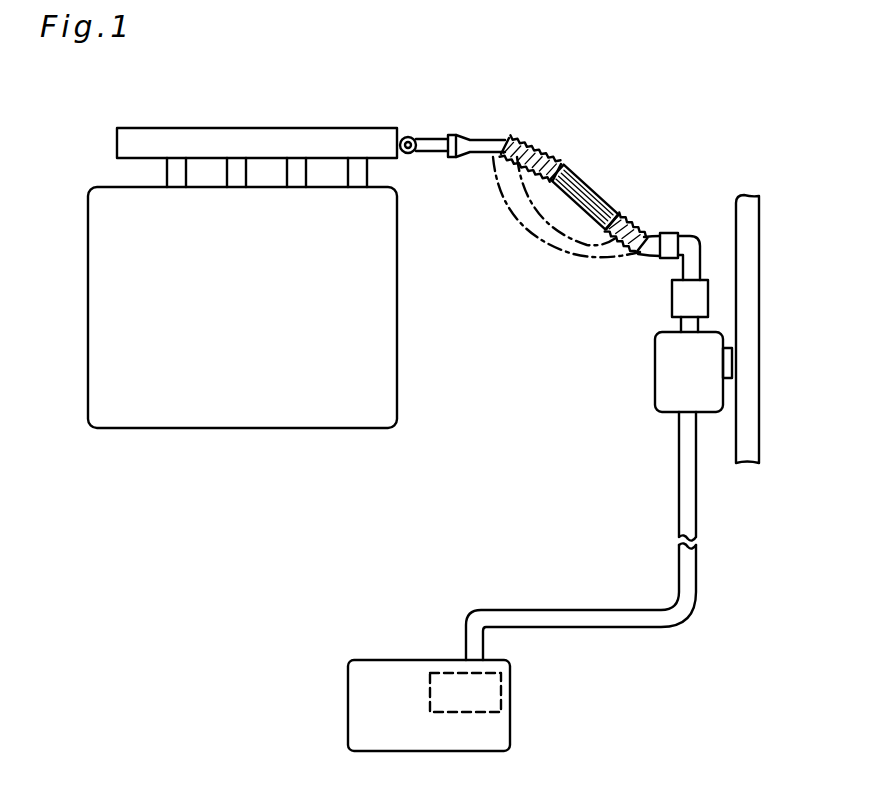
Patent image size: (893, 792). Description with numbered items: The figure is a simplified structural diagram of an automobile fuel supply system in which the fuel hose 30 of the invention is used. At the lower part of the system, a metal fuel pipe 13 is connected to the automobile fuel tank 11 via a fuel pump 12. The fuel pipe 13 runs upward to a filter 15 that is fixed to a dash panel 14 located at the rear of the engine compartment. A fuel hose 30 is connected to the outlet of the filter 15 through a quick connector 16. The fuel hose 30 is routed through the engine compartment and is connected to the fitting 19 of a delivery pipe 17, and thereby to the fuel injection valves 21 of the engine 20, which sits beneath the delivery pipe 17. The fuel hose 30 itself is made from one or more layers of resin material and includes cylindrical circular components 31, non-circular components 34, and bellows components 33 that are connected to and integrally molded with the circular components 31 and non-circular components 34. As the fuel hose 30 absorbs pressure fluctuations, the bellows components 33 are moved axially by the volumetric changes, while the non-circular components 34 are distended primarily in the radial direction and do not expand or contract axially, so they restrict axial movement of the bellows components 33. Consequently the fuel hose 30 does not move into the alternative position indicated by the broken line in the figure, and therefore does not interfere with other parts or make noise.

The automobile fuel tank 11 is at (469, 705).
The fuel pump 12 is at (504, 692).
The metal fuel pipe 13 is at (685, 508).
The dash panel 14 is at (748, 433).
The filter 15 is at (665, 383).
The quick connector 16 is at (670, 305).
The delivery pipe 17 is at (360, 128).
The fitting 19 is at (430, 148).
The engine 20 is at (380, 322).
The fuel injection valves 21 is at (357, 173).
The fuel hose 30 is at (627, 217).
The cylindrical circular components 31 is at (597, 162).
The bellows components 33 is at (540, 148).
The non-circular components 34 is at (592, 193).